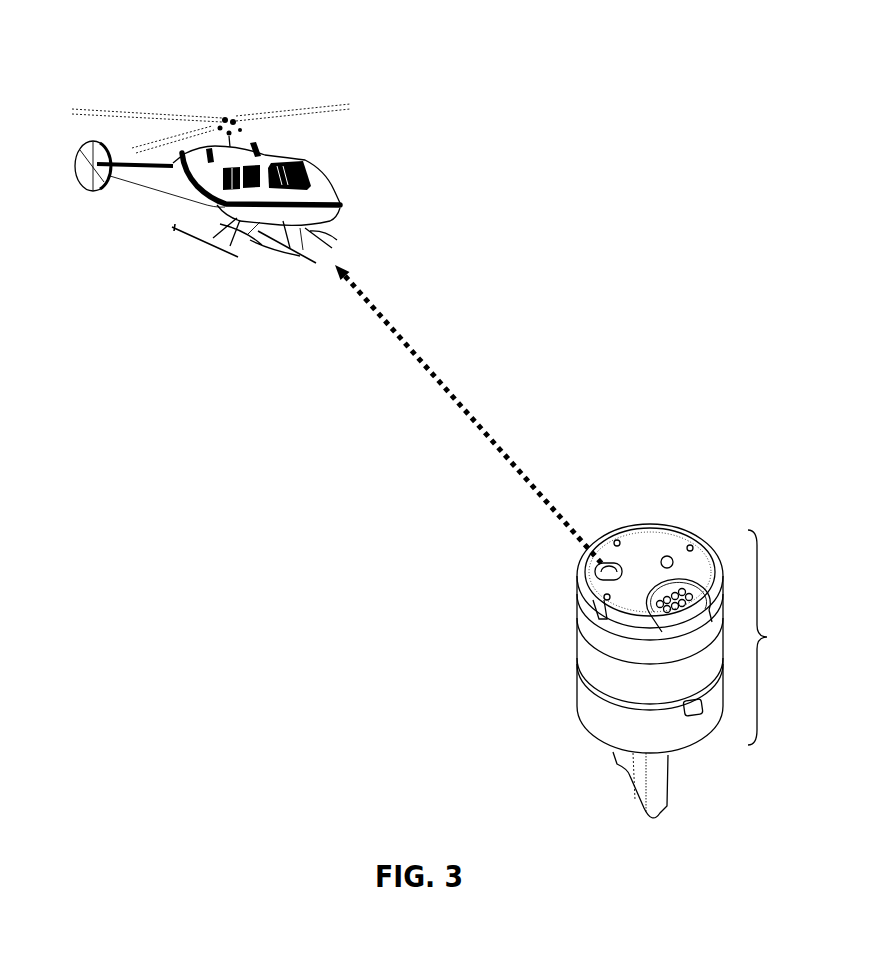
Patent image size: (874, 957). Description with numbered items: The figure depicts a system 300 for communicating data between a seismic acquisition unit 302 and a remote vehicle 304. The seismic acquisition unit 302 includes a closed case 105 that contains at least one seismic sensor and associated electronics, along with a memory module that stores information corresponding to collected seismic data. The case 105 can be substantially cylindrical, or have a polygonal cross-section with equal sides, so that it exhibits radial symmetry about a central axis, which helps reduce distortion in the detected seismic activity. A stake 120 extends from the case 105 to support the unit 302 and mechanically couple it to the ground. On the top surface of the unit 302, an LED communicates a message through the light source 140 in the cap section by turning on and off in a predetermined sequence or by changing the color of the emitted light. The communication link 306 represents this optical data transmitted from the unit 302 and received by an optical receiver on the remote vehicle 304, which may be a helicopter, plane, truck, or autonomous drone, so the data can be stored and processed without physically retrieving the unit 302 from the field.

The system 300 is at (416, 33).
The remote vehicle 304 is at (211, 171).
The communication link 306 is at (469, 415).
The seismic acquisition unit 302 is at (600, 656).
The light source 140 is at (603, 573).
The case 105 is at (782, 637).
The stake 120 is at (650, 780).